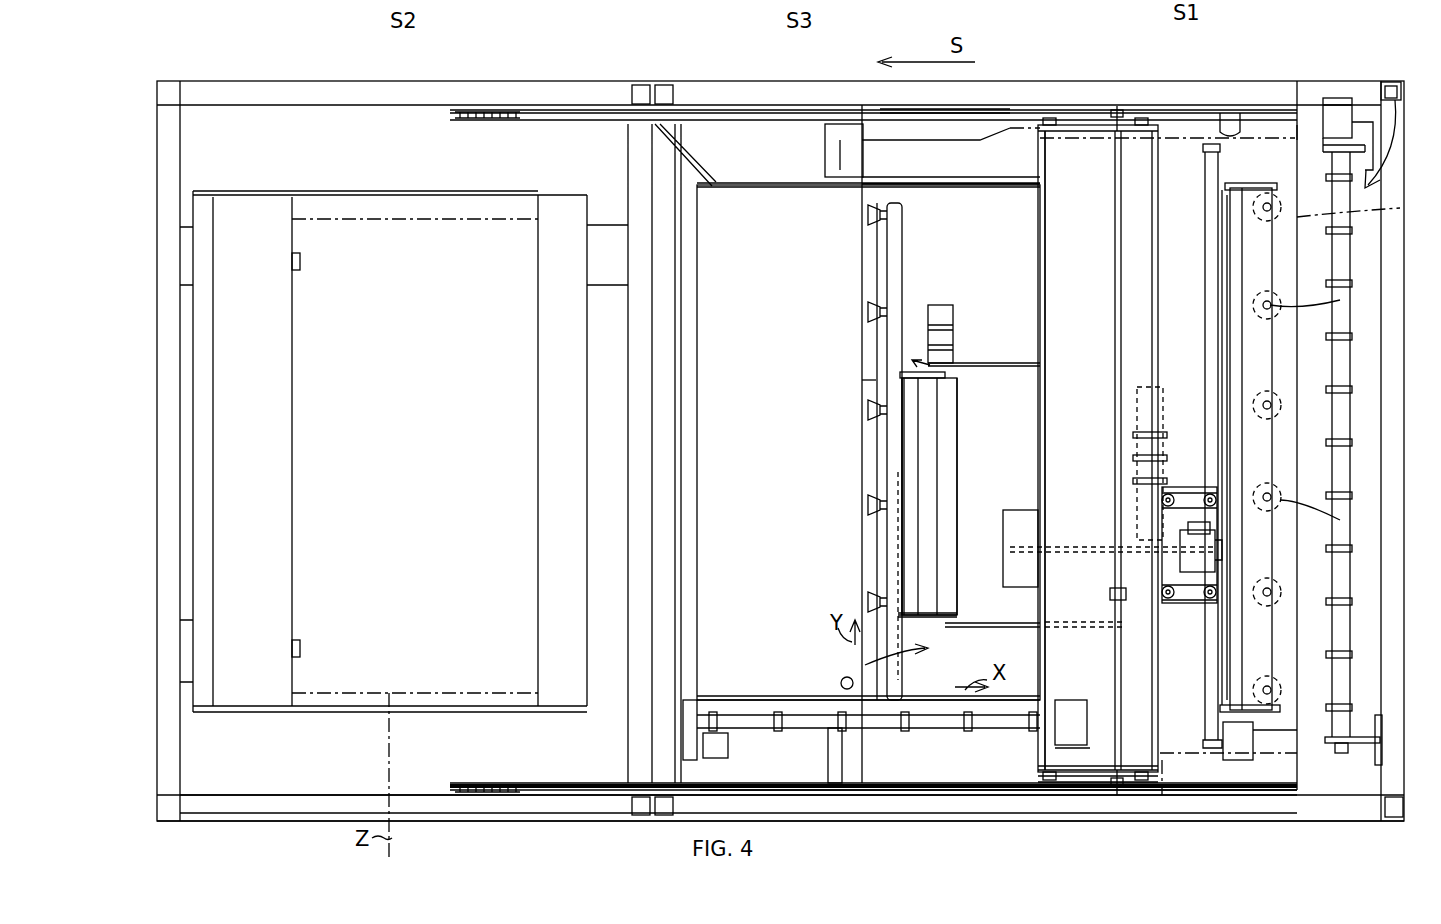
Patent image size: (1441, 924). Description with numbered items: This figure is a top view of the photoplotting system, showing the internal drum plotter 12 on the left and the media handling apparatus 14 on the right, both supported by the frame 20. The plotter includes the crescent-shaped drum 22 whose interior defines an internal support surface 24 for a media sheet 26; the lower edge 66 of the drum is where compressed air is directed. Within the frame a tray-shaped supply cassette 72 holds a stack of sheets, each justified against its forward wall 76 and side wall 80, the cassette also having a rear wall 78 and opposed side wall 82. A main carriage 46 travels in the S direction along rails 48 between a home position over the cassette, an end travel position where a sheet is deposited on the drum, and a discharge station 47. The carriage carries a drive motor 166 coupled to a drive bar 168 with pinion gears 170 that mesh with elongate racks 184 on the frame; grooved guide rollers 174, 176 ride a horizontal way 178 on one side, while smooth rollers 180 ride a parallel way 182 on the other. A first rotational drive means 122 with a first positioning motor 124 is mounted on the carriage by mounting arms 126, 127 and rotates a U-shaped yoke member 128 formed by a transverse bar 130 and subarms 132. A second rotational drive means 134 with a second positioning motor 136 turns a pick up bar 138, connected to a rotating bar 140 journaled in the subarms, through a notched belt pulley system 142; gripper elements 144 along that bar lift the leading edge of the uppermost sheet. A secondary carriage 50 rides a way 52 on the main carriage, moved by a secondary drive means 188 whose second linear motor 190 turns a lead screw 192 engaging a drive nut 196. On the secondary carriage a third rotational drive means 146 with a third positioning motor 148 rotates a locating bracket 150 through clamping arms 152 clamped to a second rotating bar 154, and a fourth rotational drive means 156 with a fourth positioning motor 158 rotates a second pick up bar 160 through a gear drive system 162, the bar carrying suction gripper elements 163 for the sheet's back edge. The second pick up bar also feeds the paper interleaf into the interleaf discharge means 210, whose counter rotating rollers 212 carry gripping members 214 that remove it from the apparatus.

The internal drum plotter 12 is at (337, 780).
The media handling apparatus 14 is at (765, 66).
The frame 20 is at (427, 822).
The drum 22 is at (240, 718).
The internal support surface 24 is at (475, 210).
The media sheet 26 is at (383, 218).
The main carriage 46 is at (1090, 125).
The discharge station 47 is at (787, 748).
The rails 48 is at (455, 112).
The secondary carriage 50 is at (1165, 470).
The way 52 is at (1010, 510).
The lower edge 66 is at (548, 420).
The supply cassette 72 is at (1300, 750).
The forward wall 76 is at (832, 376).
The rear wall 78 is at (1360, 210).
The side wall 80 is at (1200, 795).
The side wall 82 is at (1165, 138).
The first rotational drive means 122 is at (865, 665).
The first positioning motor 124 is at (960, 722).
The mounting arm 126 is at (965, 625).
The mounting arm 127 is at (975, 372).
The yoke member 128 is at (884, 484).
The transverse bar 130 is at (945, 440).
The subarms 132 is at (920, 385).
The second rotational drive means 134 is at (980, 322).
The second positioning motor 136 is at (940, 305).
The pick up bar 138 is at (887, 350).
The rotating bar 140 is at (925, 505).
The notched belt pulley system 142 is at (930, 362).
The gripper elements 144 is at (866, 312).
The third rotational drive means 146 is at (1190, 400).
The third positioning motor 148 is at (1182, 376).
The locating bracket 150 is at (1225, 185).
The clamping arms 152 is at (1272, 480).
The second rotating bar 154 is at (1180, 555).
The fourth rotational drive means 156 is at (1245, 775).
The fourth positioning motor 158 is at (1245, 740).
The second pick up bar 160 is at (1262, 262).
The gear drive system 162 is at (1296, 698).
The suction gripper elements 163 is at (1280, 400).
The drive motor 166 is at (1070, 700).
The drive bar 168 is at (1115, 400).
The pinion gears 170 is at (1117, 106).
The guide rollers 174 is at (1060, 782).
The guide rollers 176 is at (1150, 782).
The way 178 is at (900, 780).
The smooth rollers 180 is at (1050, 118).
The way 182 is at (1230, 112).
The racks 184 is at (547, 118).
The secondary drive means 188 is at (1166, 536).
The second linear motor 190 is at (1180, 565).
The lead screw 192 is at (1168, 544).
The drive nut 196 is at (1180, 555).
The interleaf discharge means 210 is at (1390, 82).
The counter rotating rollers 212 is at (1356, 300).
The gripping members 214 is at (1340, 470).